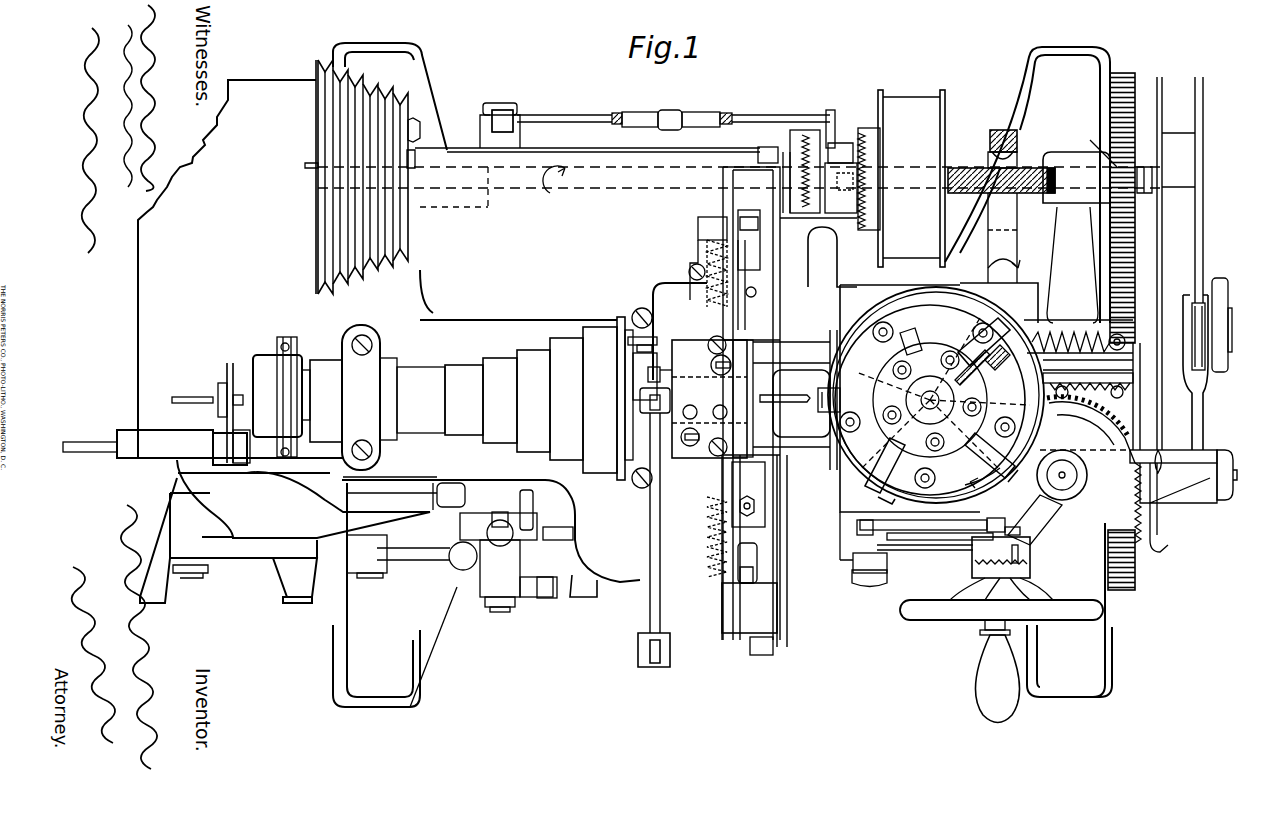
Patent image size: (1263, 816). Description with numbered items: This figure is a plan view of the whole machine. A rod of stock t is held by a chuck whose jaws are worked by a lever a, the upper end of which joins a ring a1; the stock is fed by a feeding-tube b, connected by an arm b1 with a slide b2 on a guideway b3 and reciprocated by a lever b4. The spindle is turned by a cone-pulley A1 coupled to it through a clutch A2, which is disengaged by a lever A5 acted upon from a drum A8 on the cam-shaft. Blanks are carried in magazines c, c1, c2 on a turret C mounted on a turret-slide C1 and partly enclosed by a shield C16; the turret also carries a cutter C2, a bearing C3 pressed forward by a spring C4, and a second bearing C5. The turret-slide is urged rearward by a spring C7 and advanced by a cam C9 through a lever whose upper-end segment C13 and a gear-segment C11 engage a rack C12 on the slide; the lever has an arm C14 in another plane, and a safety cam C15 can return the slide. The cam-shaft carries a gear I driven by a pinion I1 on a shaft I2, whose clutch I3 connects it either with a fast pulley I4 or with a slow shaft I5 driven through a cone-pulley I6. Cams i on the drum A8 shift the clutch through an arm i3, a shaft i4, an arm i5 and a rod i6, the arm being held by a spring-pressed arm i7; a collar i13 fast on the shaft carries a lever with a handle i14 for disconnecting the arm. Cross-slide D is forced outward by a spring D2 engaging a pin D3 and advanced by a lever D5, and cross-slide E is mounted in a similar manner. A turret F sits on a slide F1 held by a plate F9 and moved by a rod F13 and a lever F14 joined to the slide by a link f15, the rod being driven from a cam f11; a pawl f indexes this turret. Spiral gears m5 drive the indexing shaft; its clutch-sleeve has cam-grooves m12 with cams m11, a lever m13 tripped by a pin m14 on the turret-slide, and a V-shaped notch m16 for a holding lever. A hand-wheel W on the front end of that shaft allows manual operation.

The lever a is at (282, 590).
The ring a1 is at (282, 388).
The feeding-tube b is at (219, 380).
The arm b1 is at (210, 430).
The slide b2 is at (160, 458).
The guideway b3 is at (78, 452).
The lever b4 is at (170, 584).
The rod of stock t is at (183, 403).
The cams i is at (520, 492).
The arm i3 is at (537, 598).
The shaft i4 is at (500, 612).
The arm i5 is at (508, 113).
The rod i6 is at (602, 113).
The spring-pressed arm i7 is at (432, 558).
The collar i13 is at (495, 512).
The handle i14 is at (488, 525).
The gear I is at (1135, 85).
The pinion I1 is at (1095, 144).
The shaft I2 is at (1070, 180).
The clutch I3 is at (858, 135).
The pulley I4 is at (890, 104).
The shaft I5 is at (628, 183).
The cone-pulley I6 is at (396, 275).
The cross-slide E is at (740, 197).
The spiral gears m5 is at (995, 128).
The cam m11 is at (1012, 527).
The cam-groove m12 is at (1045, 535).
The lever m13 is at (895, 525).
The pin m14 is at (862, 522).
The V-shaped notch m16 is at (1020, 552).
The cone-pulley A1 is at (470, 375).
The clutch A2 is at (625, 373).
The lever A5 is at (650, 310).
The drum A8 is at (565, 480).
The pawl f is at (665, 390).
The cam f11 is at (693, 276).
The plate F9 is at (670, 400).
The link f15 is at (655, 395).
The turret F is at (793, 400).
The slide F1 is at (748, 458).
The rod F13 is at (648, 680).
The lever F14 is at (645, 618).
The turret C is at (932, 372).
The magazine c is at (880, 380).
The magazine c1 is at (885, 460).
The magazine c2 is at (978, 456).
The turret-slide C1 is at (1050, 323).
The gear-segment C11 is at (1095, 340).
The cutter C2 is at (1029, 371).
The bearing C3 is at (984, 328).
The spring C4 is at (990, 372).
The bearing C5 is at (900, 335).
The spring C7 is at (1088, 368).
The cam C9 is at (1164, 263).
The rack C12 is at (1097, 395).
The segment C13 is at (1145, 545).
The arm C14 is at (1203, 399).
The cam C15 is at (1203, 187).
The shield C16 is at (840, 478).
The cross-slide D is at (742, 613).
The spring D2 is at (707, 560).
The pin D3 is at (691, 605).
The lever D5 is at (760, 550).
The hand-wheel W is at (925, 613).